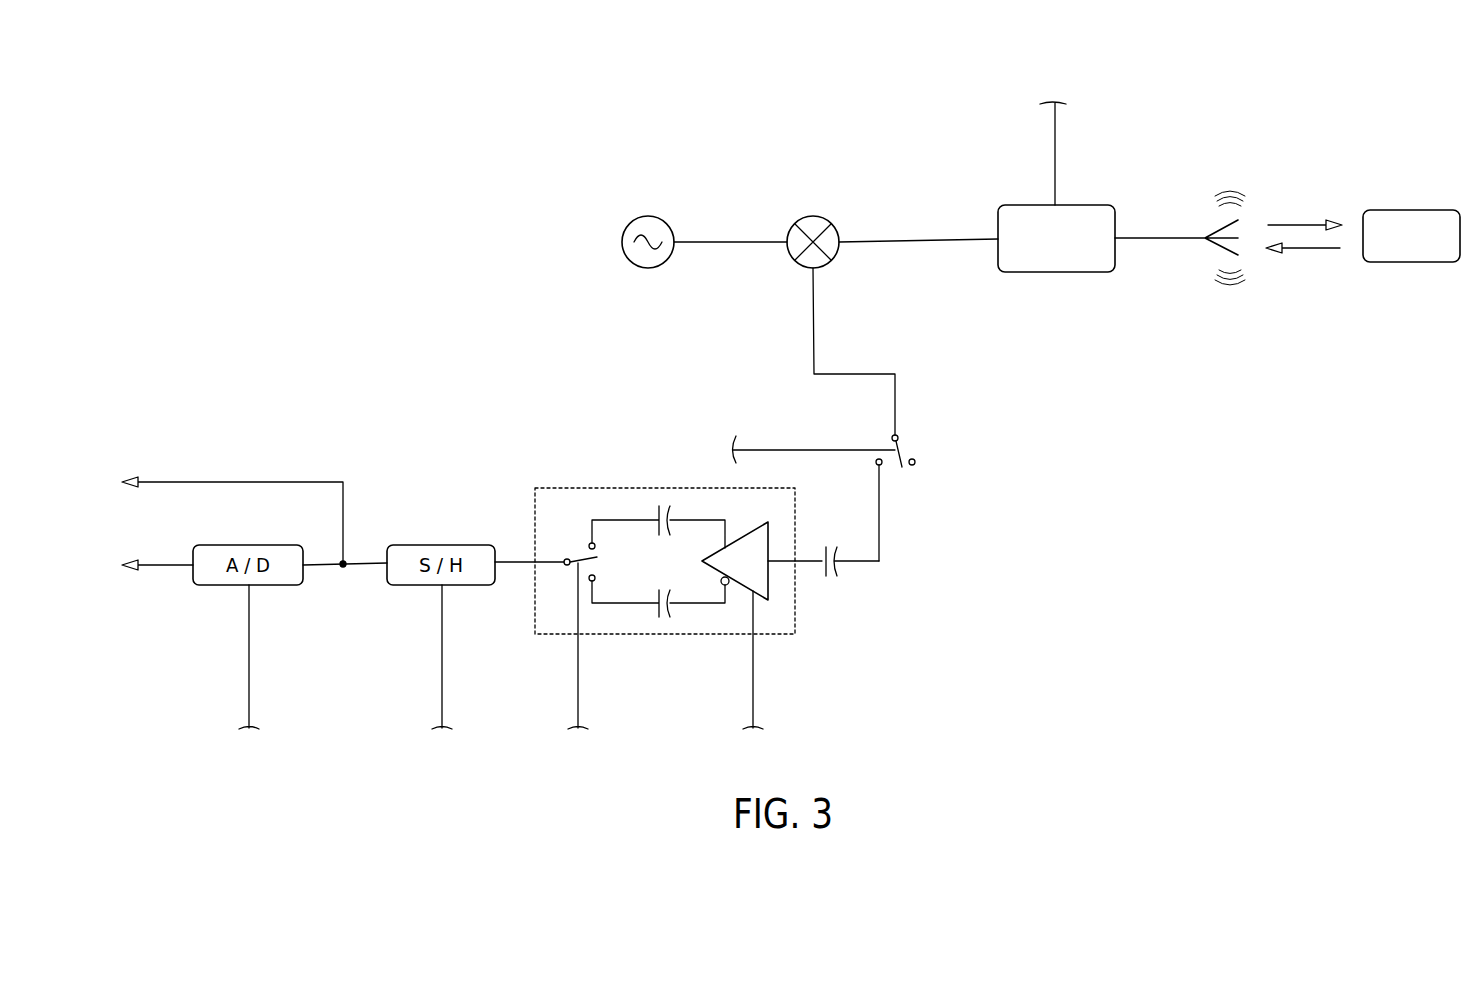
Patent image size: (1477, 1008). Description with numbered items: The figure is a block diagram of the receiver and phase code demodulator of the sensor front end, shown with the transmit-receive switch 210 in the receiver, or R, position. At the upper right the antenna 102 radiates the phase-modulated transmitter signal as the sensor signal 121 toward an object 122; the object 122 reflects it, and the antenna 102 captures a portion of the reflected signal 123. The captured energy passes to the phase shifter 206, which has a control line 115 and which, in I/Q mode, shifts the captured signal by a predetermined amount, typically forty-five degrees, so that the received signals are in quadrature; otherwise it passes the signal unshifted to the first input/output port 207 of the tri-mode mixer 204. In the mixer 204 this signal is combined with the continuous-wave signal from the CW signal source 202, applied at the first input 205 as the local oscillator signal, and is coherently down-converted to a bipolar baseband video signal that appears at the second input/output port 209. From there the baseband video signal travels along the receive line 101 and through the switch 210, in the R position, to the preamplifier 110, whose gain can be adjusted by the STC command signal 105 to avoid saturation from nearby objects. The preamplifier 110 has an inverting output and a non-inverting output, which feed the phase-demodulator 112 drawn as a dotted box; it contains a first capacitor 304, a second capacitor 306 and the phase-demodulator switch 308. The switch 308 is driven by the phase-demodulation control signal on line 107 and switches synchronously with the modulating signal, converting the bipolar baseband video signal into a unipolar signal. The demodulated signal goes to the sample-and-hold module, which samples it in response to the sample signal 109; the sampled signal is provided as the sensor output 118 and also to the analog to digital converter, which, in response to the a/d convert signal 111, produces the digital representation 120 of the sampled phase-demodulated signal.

The receive line 101 is at (765, 450).
The antenna 102 is at (1218, 228).
The STC command signal 105 is at (753, 677).
The phase-demodulation control signal line 107 is at (578, 700).
The sample signal 109 is at (442, 665).
The preamplifier 110 is at (762, 580).
The a/d convert signal 111 is at (249, 659).
The phase-demodulator 112 is at (558, 495).
The phase shifter control line 115 is at (1050, 154).
The sensor output 118 is at (160, 481).
The digital representation 120 is at (153, 570).
The sensor signal 121 is at (1328, 222).
The object 122 is at (1432, 250).
The reflected signal 123 is at (1280, 255).
The CW signal source 202 is at (641, 266).
The tri-mode mixer 204 is at (823, 218).
The first input 205 is at (792, 233).
The phase shifter 206 is at (1028, 274).
The first input/output port 207 is at (840, 238).
The second input/output port 209 is at (820, 268).
The transmit-receive switch 210 is at (917, 441).
The capacitor 304 is at (660, 504).
The capacitor 306 is at (664, 620).
The phase-demodulator switch 308 is at (562, 541).